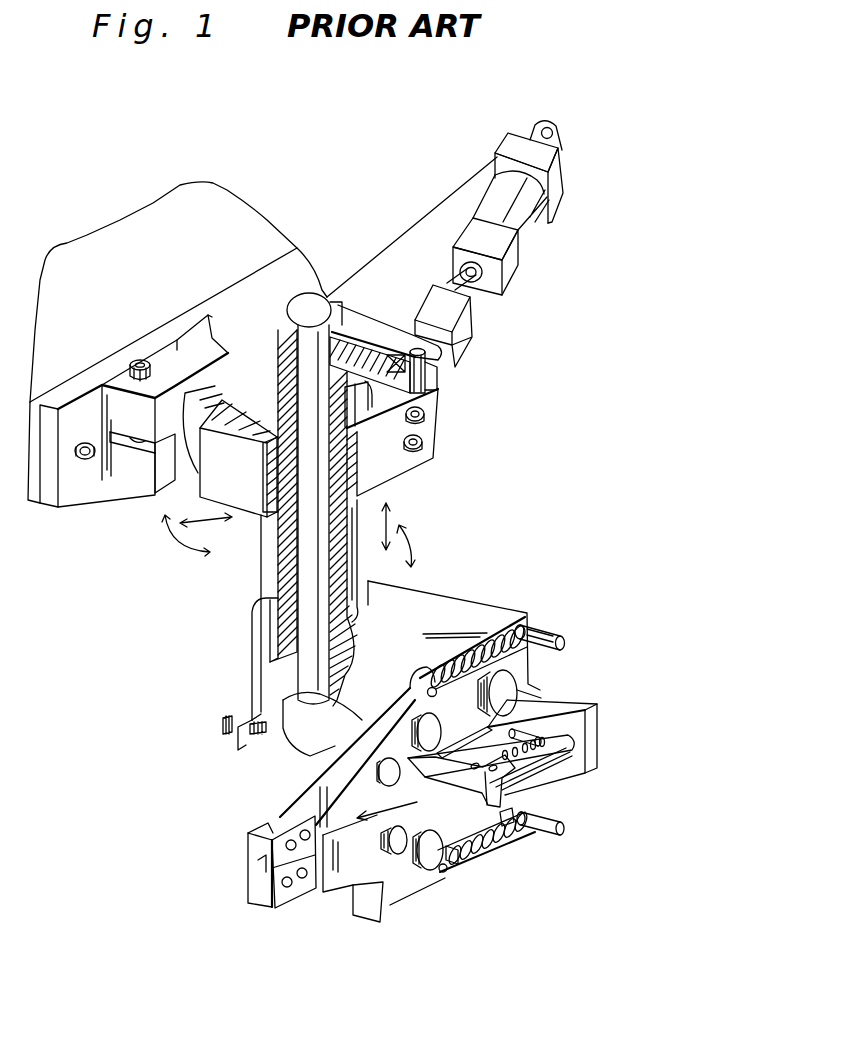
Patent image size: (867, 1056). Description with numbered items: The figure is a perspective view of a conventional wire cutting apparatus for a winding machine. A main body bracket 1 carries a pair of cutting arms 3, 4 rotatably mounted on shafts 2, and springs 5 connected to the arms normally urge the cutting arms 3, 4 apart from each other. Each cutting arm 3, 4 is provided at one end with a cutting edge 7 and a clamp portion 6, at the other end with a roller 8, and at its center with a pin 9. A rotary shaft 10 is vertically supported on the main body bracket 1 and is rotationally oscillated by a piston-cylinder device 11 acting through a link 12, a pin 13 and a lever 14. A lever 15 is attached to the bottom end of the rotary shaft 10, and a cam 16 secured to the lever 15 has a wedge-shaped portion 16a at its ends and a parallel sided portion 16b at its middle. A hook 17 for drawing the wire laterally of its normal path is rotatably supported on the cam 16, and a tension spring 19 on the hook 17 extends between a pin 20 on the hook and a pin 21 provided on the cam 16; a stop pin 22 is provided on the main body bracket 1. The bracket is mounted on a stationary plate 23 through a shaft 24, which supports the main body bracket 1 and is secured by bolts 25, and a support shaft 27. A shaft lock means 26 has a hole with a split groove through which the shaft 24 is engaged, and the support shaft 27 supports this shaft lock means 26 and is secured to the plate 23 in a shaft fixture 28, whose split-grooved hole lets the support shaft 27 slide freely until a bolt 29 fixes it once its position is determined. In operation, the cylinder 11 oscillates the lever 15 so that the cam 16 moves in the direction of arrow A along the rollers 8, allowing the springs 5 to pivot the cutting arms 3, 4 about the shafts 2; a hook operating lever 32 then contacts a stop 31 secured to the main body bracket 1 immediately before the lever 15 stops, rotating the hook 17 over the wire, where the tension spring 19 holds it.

The main body bracket 1 is at (457, 607).
The shaft 2 is at (427, 712).
The cutting arm 3 is at (308, 808).
The cutting arm 4 is at (352, 888).
The spring 5 is at (545, 680).
The clamp portion 6 is at (255, 862).
The cutting edge 7 is at (270, 912).
The roller 8 is at (510, 820).
The pin 9 is at (388, 786).
The rotary shaft 10 is at (300, 688).
The piston-cylinder device 11 is at (530, 218).
The link 12 is at (463, 326).
The pin 13 is at (432, 378).
The lever 14 is at (368, 320).
The lever 15 is at (310, 733).
The cam 16 is at (547, 730).
The wedge-shaped portion 16a is at (560, 716).
The parallel sided portion 16b is at (572, 752).
The hook 17 is at (450, 857).
The tension spring 19 is at (528, 810).
The pin 20 is at (510, 838).
The pin 21 is at (562, 777).
The stop pin 22 is at (540, 784).
The stationary plate 23 is at (247, 230).
The shaft 24 is at (265, 573).
The bolt 25 is at (425, 418).
The shaft lock means 26 is at (245, 452).
The support shaft 27 is at (151, 487).
The shaft fixture 28 is at (115, 485).
The bolt 29 is at (135, 360).
The stop 31 is at (230, 732).
The hook operating lever 32 is at (498, 838).